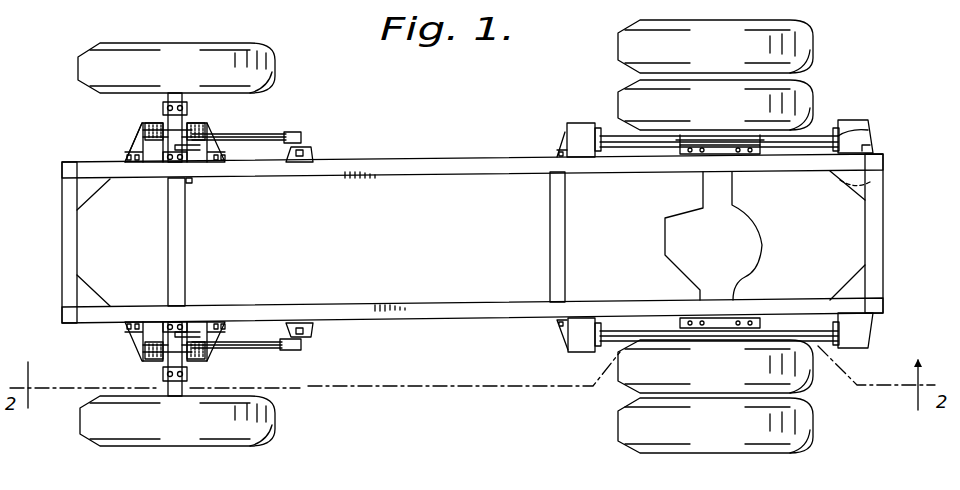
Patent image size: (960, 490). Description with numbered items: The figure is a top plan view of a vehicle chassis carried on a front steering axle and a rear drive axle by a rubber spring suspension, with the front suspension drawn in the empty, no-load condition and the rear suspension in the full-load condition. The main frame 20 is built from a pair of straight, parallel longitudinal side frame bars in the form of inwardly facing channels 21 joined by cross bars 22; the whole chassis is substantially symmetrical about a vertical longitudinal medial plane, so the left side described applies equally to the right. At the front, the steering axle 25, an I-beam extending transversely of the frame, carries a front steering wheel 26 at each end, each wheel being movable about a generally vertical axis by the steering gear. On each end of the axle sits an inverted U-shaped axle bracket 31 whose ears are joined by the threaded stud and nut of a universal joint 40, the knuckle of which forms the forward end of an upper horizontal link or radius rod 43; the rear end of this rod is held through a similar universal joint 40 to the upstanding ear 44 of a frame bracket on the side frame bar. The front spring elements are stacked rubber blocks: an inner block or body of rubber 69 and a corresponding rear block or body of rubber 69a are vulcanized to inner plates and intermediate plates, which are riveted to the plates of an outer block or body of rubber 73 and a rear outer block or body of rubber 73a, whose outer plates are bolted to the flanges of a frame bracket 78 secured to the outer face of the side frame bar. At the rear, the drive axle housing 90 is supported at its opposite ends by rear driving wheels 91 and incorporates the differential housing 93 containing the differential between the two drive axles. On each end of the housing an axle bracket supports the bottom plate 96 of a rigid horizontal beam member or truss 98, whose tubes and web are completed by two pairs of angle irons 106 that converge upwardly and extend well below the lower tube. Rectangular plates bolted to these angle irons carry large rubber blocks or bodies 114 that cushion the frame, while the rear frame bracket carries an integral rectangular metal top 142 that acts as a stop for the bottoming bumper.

The main frame 20 is at (472, 220).
The side frame bars 21 is at (512, 174).
The cross bars 22 is at (62, 225).
The steering axle 25 is at (186, 233).
The front steering wheel 26 is at (218, 28).
The axle bracket 31 is at (176, 100).
The universal joint 40 is at (302, 140).
The upper horizontal link or radius rod 43 is at (258, 136).
The upstanding ear 44 is at (316, 152).
The block or body of rubber 69 is at (156, 120).
The block or body of rubber 69a is at (196, 120).
The outer block or body of rubber 73 is at (147, 130).
The outer block or body of rubber 73a is at (205, 130).
The frame bracket 78 is at (123, 151).
The drive axle housing 90 is at (730, 193).
The rear driving wheels 91 is at (812, 100).
The differential housing 93 is at (758, 248).
The bottom plate 96 is at (712, 146).
The rigid horizontal beam member or truss 98 is at (664, 147).
The angle irons 106 is at (604, 128).
The rubber blocks or bodies 114 is at (858, 136).
The rectangular metal top 142 is at (855, 140).